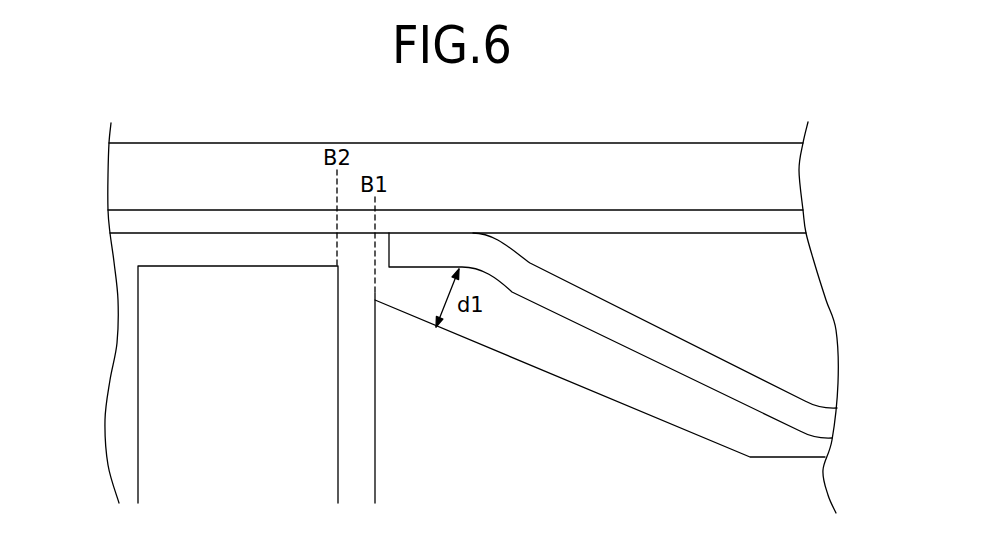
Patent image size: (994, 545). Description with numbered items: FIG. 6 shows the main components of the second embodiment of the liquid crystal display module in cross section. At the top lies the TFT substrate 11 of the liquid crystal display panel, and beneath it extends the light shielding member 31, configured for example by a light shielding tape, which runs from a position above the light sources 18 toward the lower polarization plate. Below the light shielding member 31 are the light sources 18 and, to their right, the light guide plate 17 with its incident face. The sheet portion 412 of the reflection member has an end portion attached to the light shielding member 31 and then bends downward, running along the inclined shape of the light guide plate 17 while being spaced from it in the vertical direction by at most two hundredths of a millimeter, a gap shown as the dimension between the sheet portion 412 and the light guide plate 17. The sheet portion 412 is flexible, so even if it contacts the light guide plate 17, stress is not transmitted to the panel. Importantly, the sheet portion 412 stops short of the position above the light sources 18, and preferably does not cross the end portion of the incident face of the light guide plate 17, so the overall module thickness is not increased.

The TFT substrate 11 is at (132, 175).
The light shielding member 31 is at (132, 223).
The light sources 18 is at (165, 354).
The light guide plate 17 is at (400, 388).
The sheet portion 412 is at (590, 307).